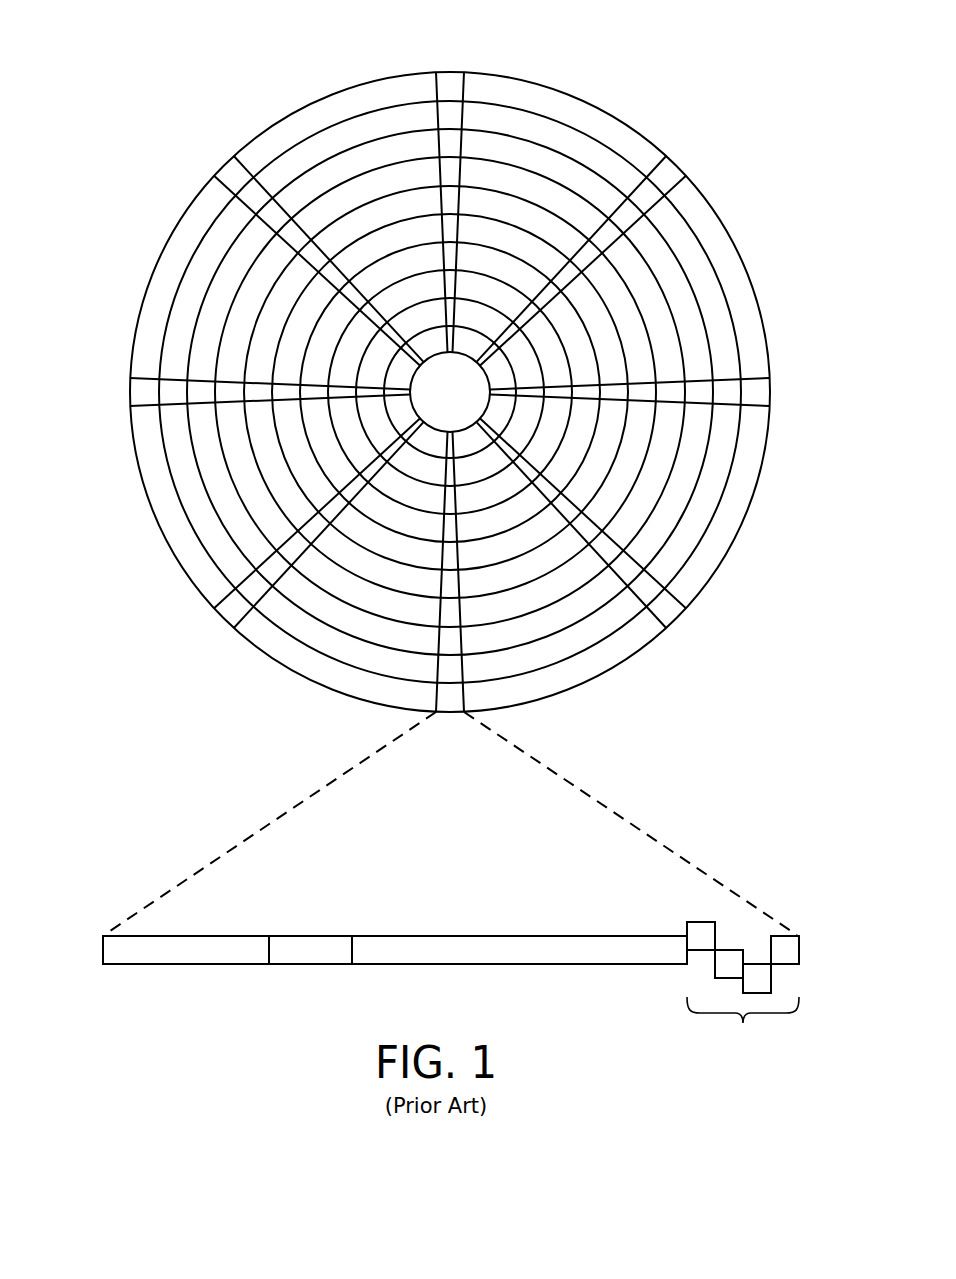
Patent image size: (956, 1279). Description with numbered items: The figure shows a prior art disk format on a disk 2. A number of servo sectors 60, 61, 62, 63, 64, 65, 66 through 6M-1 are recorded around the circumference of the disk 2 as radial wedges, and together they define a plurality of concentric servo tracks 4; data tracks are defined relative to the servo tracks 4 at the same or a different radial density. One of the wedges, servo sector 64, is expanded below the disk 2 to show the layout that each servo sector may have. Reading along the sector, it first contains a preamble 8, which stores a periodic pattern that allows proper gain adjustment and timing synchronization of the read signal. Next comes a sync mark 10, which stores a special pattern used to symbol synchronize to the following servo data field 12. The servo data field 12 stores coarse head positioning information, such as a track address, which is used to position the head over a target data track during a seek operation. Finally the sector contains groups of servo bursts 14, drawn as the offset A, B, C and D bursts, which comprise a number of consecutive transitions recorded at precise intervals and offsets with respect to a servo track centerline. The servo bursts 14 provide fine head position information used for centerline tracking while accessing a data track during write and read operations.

The disk 2 is at (213, 76).
The servo tracks 4 is at (560, 138).
The servo sector 60 is at (451, 82).
The servo sector 61 is at (670, 173).
The servo sector 62 is at (768, 395).
The servo sector 63 is at (676, 620).
The servo sector 64 is at (309, 790).
The servo sector 65 is at (228, 613).
The servo sector 66 is at (137, 392).
The servo sector 6M-1 is at (232, 175).
The preamble 8 is at (163, 964).
The sync mark 10 is at (306, 964).
The servo data field 12 is at (512, 964).
The servo bursts 14 is at (674, 902).